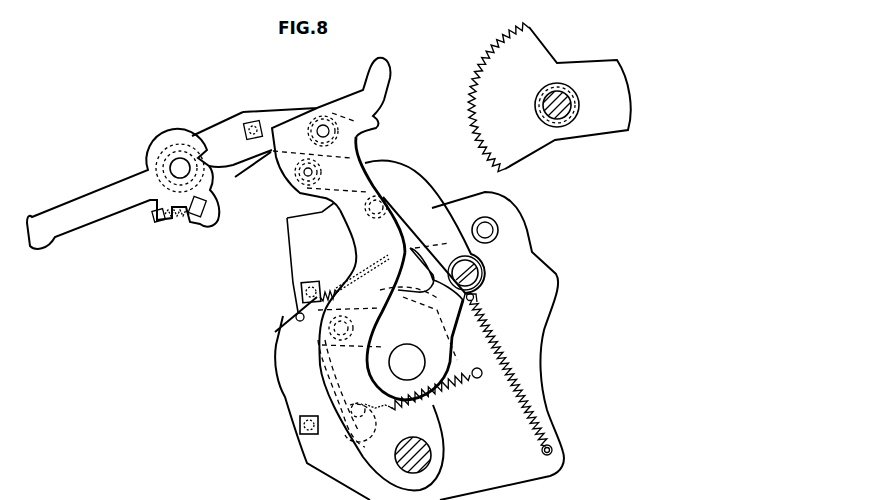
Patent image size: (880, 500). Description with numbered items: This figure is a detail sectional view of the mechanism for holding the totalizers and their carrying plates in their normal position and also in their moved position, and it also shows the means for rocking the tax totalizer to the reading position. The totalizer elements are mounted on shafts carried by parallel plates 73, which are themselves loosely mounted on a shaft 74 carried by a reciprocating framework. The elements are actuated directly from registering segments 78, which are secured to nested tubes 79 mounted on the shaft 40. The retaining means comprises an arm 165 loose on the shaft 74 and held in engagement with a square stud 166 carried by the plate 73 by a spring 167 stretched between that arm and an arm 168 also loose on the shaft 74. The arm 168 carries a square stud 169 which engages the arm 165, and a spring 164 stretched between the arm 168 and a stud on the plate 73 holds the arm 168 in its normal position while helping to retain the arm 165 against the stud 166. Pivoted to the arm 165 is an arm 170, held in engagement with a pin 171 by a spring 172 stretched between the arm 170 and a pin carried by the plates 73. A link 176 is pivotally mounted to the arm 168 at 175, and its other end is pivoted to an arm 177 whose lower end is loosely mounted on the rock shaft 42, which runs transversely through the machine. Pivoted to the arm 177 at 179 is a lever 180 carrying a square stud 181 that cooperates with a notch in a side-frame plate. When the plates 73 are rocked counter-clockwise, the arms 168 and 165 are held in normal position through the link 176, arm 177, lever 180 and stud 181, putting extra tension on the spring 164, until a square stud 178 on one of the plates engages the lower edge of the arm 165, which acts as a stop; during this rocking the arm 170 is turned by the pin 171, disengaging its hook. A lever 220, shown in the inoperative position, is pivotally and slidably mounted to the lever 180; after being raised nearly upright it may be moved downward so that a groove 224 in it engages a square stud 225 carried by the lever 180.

The lever 220 is at (73, 207).
The groove 224 is at (233, 176).
The square stud 225 is at (197, 216).
The square stud 181 is at (246, 121).
The lever 180 is at (267, 117).
The pivot 179 is at (322, 124).
The link 176 is at (398, 178).
The pivot 175 is at (481, 273).
The arm 168 is at (476, 290).
The arm 177 is at (352, 222).
The spring 167 is at (372, 270).
The square stud 166 is at (301, 289).
The arm 165 is at (298, 327).
The arm 170 is at (345, 373).
The shaft 74 is at (412, 362).
The square stud 169 is at (373, 305).
The plate 73 is at (512, 218).
The spring 164 is at (493, 331).
The spring 172 is at (445, 397).
The square stud 178 is at (300, 431).
The pin 171 is at (367, 423).
The rock shaft 42 is at (415, 456).
The registering segment 78 is at (532, 43).
The nested tube 79 is at (542, 95).
The shaft 40 is at (572, 100).